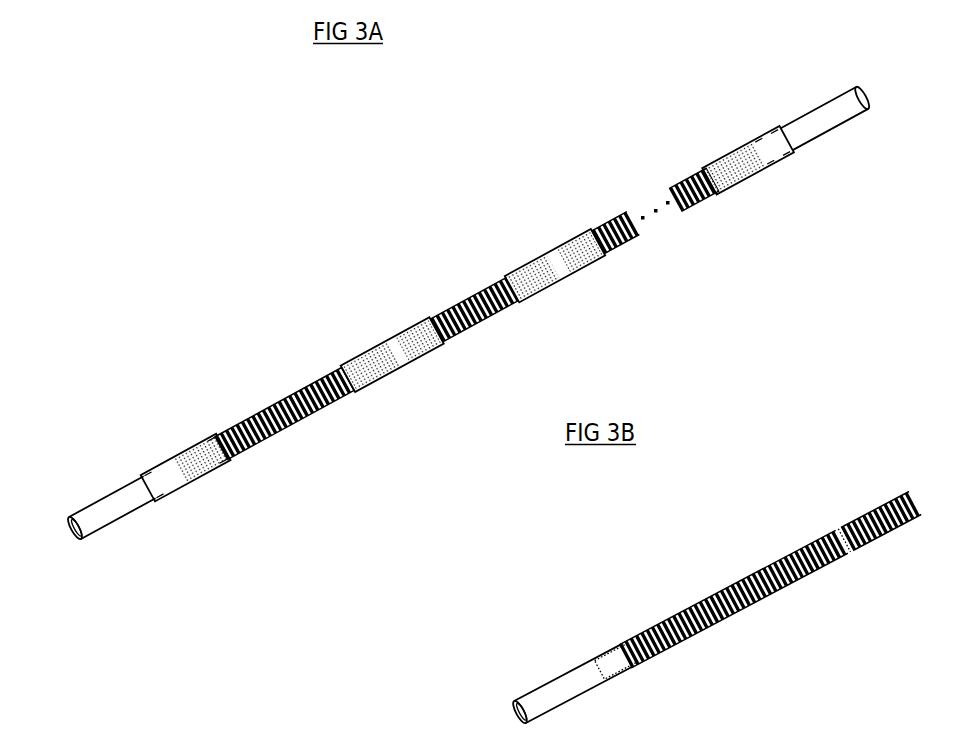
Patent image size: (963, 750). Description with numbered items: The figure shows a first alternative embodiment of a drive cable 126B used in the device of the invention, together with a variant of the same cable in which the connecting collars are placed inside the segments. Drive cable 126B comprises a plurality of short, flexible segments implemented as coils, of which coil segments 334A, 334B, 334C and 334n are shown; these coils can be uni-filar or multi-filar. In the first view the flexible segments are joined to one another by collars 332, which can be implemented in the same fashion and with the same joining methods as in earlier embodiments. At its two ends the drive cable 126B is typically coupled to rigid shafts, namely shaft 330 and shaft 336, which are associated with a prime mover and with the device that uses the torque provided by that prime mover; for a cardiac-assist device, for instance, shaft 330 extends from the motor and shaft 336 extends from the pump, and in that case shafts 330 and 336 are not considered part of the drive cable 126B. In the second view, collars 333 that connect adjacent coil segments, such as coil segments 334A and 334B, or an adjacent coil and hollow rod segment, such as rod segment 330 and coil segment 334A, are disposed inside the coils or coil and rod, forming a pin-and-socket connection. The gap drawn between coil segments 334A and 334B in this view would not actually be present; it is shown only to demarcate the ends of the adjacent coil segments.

In FIG. 3A, the drive cable 126B is at (282, 144).
In FIG. 3A, the shaft 330 is at (108, 513).
In FIG. 3B, the shaft 330 is at (555, 697).
In FIG. 3A, the collars 332 is at (175, 450).
In FIG. 3B, the collars 333 is at (610, 652).
In FIG. 3A, the coil segment 334A is at (265, 403).
In FIG. 3B, the coil segment 334A is at (712, 590).
In FIG. 3A, the coil segment 334B is at (457, 303).
In FIG. 3B, the coil segment 334B is at (905, 485).
In FIG. 3A, the coil segment 334C is at (607, 215).
In FIG. 3A, the coil segment 334n is at (687, 170).
In FIG. 3A, the shaft 336 is at (830, 113).